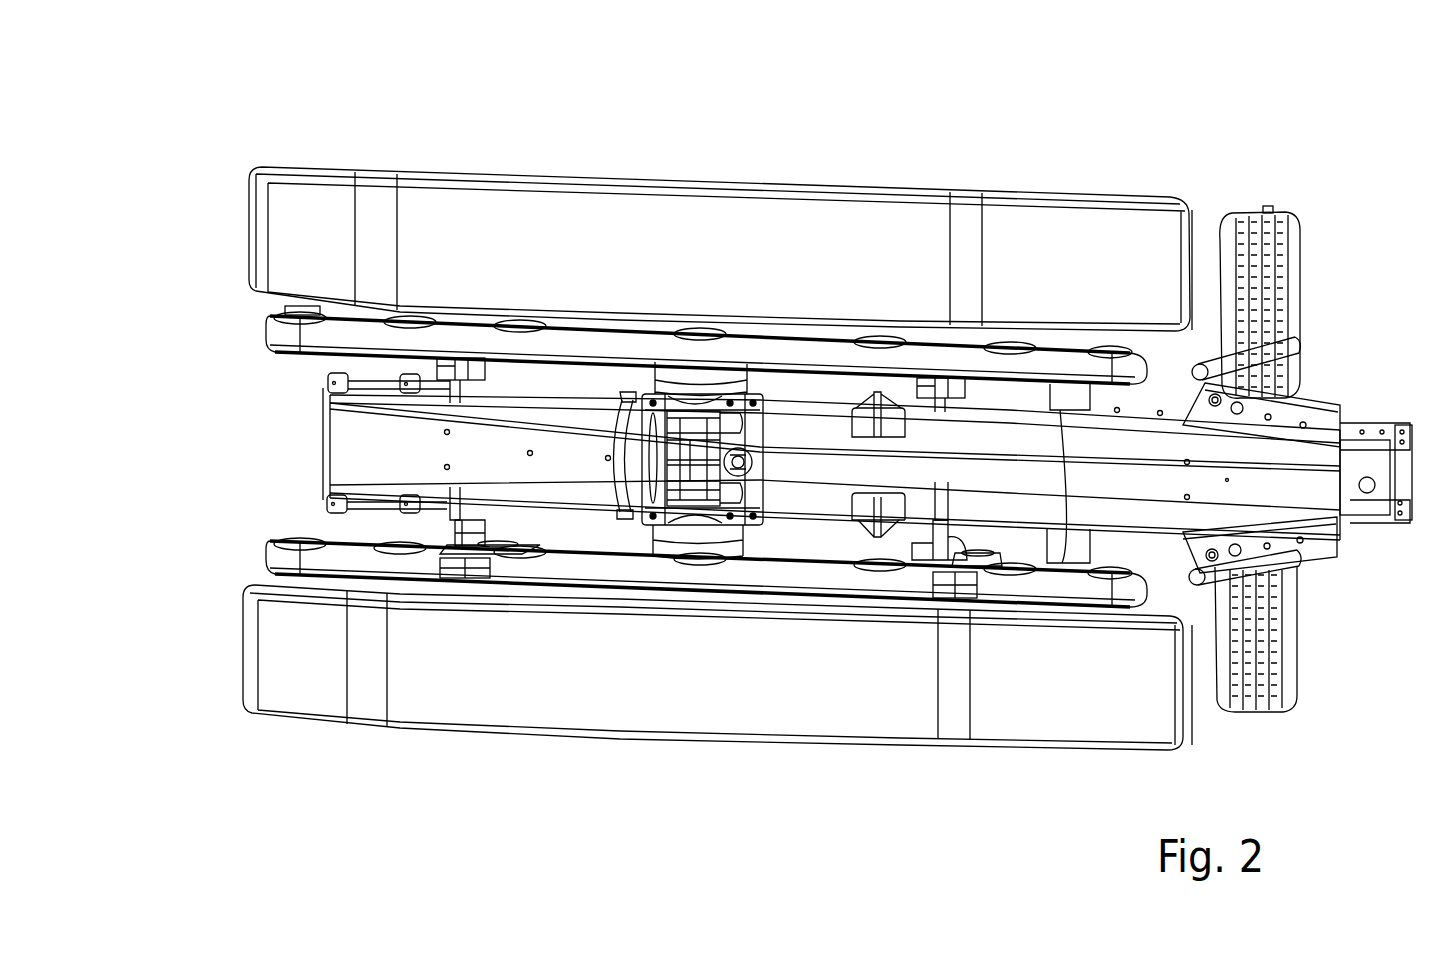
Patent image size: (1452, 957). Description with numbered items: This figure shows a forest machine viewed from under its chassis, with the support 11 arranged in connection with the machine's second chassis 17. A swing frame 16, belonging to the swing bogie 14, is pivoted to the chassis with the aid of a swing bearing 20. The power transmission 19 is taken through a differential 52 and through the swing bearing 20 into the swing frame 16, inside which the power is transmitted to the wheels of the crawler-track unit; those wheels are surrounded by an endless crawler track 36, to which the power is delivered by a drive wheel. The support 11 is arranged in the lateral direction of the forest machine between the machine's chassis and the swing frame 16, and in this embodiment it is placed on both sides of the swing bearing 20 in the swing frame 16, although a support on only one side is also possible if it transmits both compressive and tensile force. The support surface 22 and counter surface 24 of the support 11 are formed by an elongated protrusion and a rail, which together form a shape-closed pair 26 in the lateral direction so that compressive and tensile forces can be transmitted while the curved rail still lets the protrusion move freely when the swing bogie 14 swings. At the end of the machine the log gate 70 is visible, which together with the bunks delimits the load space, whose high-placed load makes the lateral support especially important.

The support 11 is at (450, 325).
The swing bogie 14 is at (716, 466).
The swing frame 16 is at (960, 365).
The second chassis 17 is at (280, 434).
The power transmission 19 is at (625, 415).
The swing bearing 20 is at (718, 392).
The support surface 22 is at (428, 527).
The counter surface 24 is at (425, 553).
The pair 26 is at (466, 580).
The endless crawler track 36 is at (1055, 709).
The differential 52 is at (770, 478).
The log gate 70 is at (1267, 693).